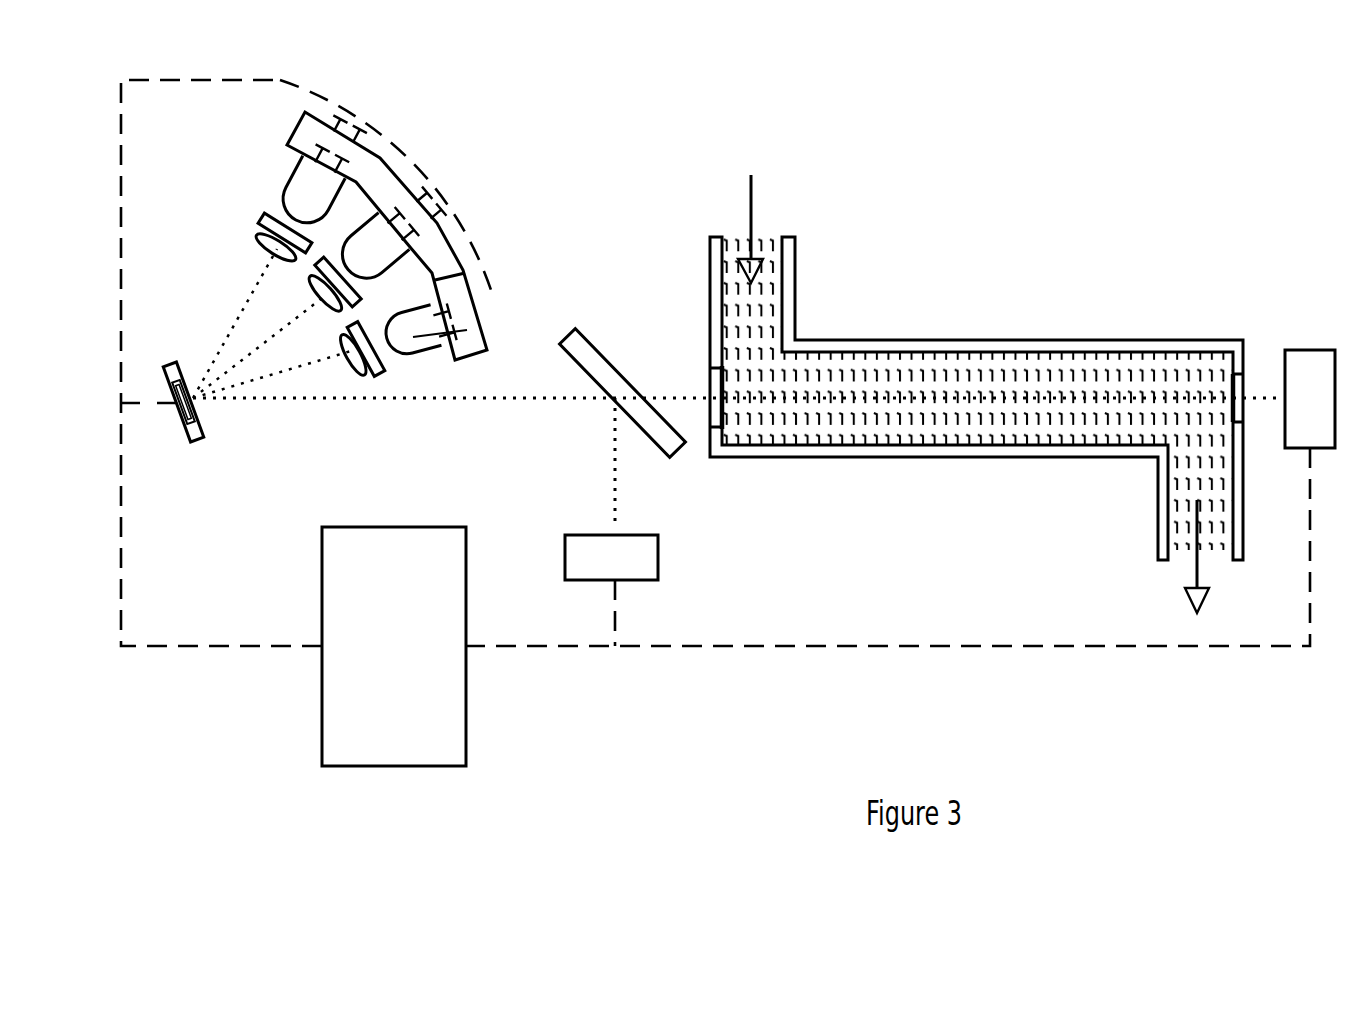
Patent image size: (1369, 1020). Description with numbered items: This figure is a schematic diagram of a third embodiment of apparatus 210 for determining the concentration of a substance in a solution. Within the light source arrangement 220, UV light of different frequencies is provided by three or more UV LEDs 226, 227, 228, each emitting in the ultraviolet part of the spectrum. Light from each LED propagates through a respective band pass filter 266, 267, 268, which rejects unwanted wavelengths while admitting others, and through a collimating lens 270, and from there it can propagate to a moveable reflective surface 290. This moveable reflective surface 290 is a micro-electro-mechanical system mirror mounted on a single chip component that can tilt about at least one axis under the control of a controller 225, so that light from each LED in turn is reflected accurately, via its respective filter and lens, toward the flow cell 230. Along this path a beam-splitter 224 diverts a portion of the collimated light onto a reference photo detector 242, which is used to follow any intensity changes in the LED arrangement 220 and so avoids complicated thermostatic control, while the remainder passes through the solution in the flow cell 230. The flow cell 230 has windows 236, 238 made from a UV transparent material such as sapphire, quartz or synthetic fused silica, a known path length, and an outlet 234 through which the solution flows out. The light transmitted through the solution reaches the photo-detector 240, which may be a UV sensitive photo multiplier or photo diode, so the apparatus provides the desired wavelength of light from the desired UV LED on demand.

The apparatus 210 is at (993, 100).
The arrangement of light emitting diodes 220 is at (556, 131).
The beam-splitter 224 is at (597, 348).
The controller 225 is at (410, 733).
The UV LED 226 is at (312, 192).
The UV LED 227 is at (383, 257).
The UV LED 228 is at (490, 302).
The flow cell 230 is at (1020, 360).
The outlet 234 is at (1177, 560).
The window 236 is at (712, 385).
The window 238 is at (1240, 385).
The photo-detector 240 is at (1312, 366).
The reference photo detector 242 is at (602, 563).
The band pass filter 266 is at (260, 221).
The band pass filter 267 is at (322, 262).
The band pass filter 268 is at (381, 362).
The collimating lens 270 is at (282, 263).
The moveable reflective surface 290 is at (181, 416).